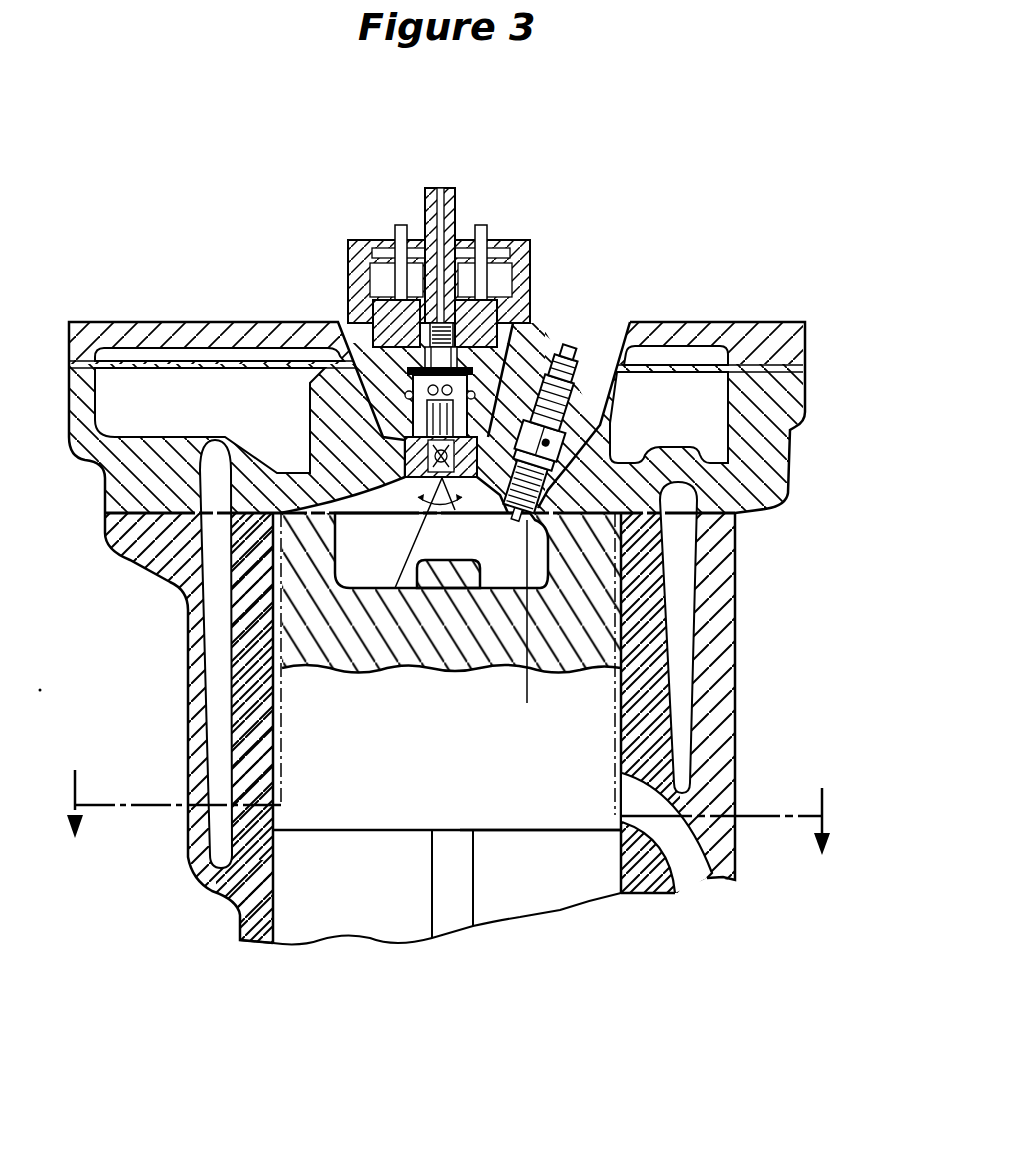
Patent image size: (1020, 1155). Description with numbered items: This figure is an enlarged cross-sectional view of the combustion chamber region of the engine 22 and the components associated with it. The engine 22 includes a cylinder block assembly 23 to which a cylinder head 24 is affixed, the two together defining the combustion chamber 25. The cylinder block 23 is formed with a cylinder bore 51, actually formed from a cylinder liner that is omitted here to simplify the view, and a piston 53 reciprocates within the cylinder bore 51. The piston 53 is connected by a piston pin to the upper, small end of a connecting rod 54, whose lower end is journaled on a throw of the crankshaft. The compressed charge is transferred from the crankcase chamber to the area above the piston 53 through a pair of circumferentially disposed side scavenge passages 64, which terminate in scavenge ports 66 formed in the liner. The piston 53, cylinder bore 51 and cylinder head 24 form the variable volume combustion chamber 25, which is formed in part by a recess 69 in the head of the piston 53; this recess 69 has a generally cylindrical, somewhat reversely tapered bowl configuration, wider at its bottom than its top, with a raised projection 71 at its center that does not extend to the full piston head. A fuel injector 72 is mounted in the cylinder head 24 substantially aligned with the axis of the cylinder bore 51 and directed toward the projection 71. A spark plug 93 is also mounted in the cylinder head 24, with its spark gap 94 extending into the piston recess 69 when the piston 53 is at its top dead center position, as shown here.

The engine 22 is at (474, 556).
The cylinder block assembly 23 is at (735, 668).
The cylinder head 24 is at (792, 462).
The combustion chamber 25 is at (403, 510).
The cylinder bore 51 is at (275, 895).
The piston 53 is at (510, 822).
The connecting rod 54 is at (430, 870).
The side scavenge passages 64 is at (690, 883).
The scavenge ports 66 is at (620, 793).
The recess 69 is at (340, 537).
The raised projection 71 is at (453, 556).
The fuel injector 72 is at (530, 260).
The spark plug 93 is at (577, 340).
The spark gap 94 is at (531, 627).